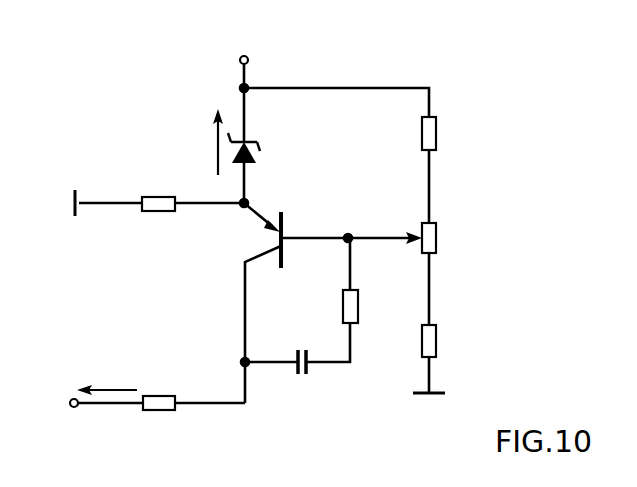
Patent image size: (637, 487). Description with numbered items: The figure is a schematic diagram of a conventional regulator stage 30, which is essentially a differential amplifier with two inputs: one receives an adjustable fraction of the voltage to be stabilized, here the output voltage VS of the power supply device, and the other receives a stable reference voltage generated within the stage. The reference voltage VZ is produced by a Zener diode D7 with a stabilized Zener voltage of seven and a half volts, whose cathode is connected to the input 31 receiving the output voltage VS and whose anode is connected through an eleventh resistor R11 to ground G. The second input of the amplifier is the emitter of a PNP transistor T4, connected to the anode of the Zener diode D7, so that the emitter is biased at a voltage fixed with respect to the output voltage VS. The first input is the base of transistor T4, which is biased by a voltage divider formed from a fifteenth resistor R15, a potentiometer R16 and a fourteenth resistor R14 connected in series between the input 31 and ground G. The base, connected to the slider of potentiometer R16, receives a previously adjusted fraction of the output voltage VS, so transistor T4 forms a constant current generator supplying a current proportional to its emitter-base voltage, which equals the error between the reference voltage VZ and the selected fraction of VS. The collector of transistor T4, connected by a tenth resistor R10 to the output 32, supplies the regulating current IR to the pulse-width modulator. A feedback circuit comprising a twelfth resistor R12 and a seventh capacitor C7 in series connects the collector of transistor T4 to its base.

The regulator stage 30 is at (138, 140).
The input terminal 31 is at (243, 70).
The output 32 is at (74, 398).
The output voltage VS is at (249, 40).
The reference voltage VZ is at (216, 160).
The regulating current IR is at (107, 380).
The Zener diode D7 is at (251, 164).
The PNP transistor T4 is at (284, 232).
The tenth resistor R10 is at (157, 403).
The eleventh resistor R11 is at (157, 203).
The twelfth resistor R12 is at (343, 307).
The fourteenth resistor R14 is at (437, 342).
The fifteenth resistor R15 is at (437, 134).
The potentiometer R16 is at (437, 236).
The seventh capacitor C7 is at (298, 370).
The ground G is at (76, 204).